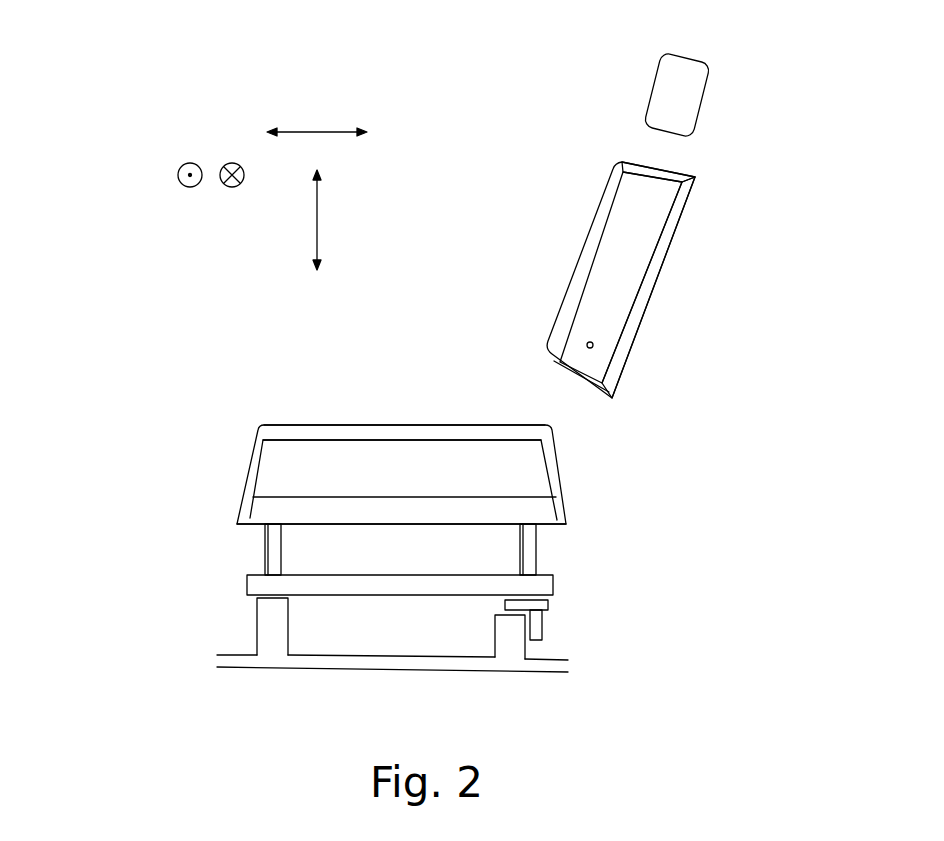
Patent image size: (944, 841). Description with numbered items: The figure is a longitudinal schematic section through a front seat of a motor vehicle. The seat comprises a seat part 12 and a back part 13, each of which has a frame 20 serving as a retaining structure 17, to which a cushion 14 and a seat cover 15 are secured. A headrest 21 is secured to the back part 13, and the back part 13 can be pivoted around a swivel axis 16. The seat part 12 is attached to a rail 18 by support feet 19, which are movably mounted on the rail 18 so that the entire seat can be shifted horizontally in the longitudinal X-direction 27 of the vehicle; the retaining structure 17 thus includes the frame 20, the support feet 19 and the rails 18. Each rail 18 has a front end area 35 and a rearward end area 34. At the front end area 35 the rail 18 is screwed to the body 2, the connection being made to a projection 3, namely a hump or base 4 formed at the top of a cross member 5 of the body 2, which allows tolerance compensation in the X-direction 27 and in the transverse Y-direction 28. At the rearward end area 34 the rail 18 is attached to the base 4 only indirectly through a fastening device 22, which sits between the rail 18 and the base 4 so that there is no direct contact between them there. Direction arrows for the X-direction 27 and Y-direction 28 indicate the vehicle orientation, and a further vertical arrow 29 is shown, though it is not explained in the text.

The body 2 is at (394, 666).
The projection 3 is at (391, 666).
The base 4 is at (272, 642).
The cross member 5 is at (397, 665).
The seat part 12 is at (231, 422).
The back part 13 is at (591, 280).
The cushion 14 is at (608, 298).
The seat cover 15 is at (607, 192).
The swivel axis 16 is at (588, 343).
The retaining structure 17 is at (420, 401).
The rail 18 is at (393, 600).
The support feet 19 is at (265, 530).
The frame 20 is at (648, 280).
The headrest 21 is at (692, 98).
The fastening device 22 is at (552, 608).
The X-direction 27 is at (315, 130).
The Y-direction 28 is at (240, 163).
The vertical direction 29 is at (318, 220).
The rearward end area 34 is at (527, 587).
The front end area 35 is at (270, 582).